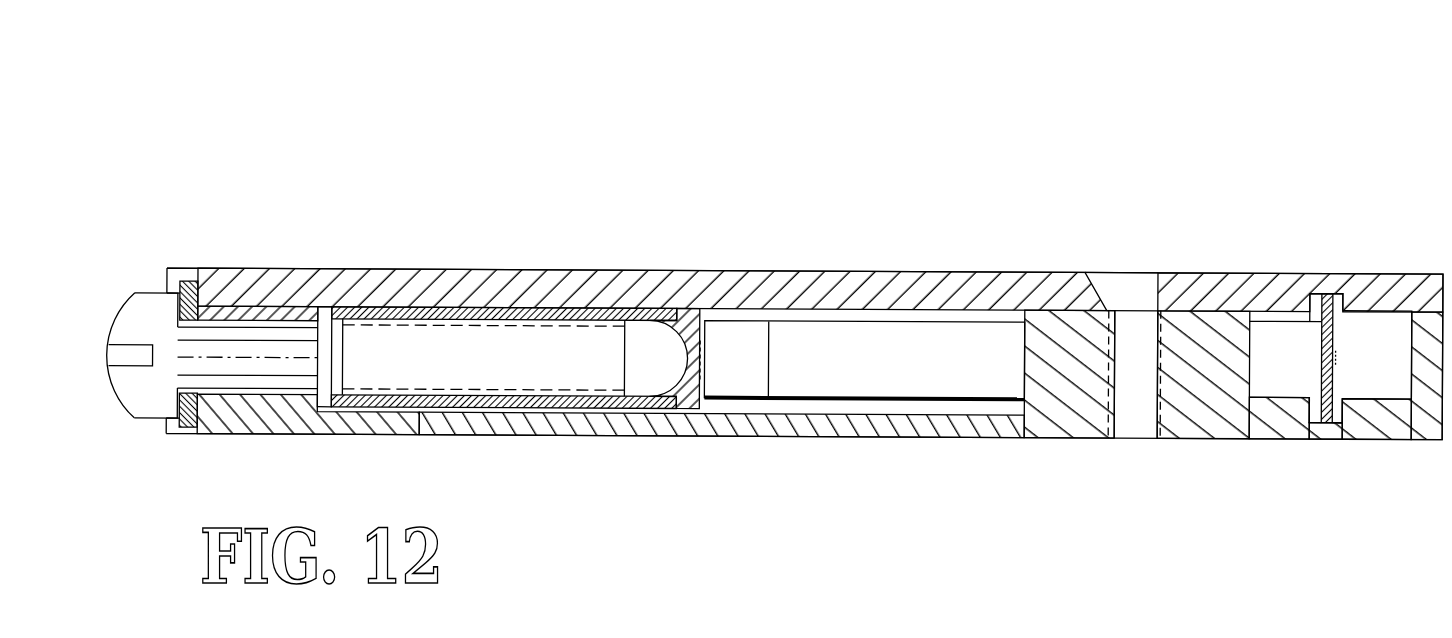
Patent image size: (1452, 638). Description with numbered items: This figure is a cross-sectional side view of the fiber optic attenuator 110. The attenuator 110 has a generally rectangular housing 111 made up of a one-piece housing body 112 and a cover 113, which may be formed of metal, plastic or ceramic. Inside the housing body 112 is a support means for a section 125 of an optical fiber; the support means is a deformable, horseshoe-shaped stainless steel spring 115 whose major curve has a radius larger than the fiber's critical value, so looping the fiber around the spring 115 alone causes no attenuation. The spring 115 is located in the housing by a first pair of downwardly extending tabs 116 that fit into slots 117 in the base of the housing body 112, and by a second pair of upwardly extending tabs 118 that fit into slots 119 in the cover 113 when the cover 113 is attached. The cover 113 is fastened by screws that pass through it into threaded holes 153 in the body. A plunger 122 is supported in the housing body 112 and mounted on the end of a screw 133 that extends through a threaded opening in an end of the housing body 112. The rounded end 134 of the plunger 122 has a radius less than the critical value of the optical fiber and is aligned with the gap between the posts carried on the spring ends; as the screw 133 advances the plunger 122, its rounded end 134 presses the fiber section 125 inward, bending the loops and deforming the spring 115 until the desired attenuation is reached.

The attenuator 110 is at (395, 148).
The housing 111 is at (1238, 434).
The housing body 112 is at (878, 434).
The cover 113 is at (738, 265).
The spring 115 is at (1312, 330).
The downwardly extending tabs 116 is at (1322, 412).
The slots 117 is at (1348, 394).
The upwardly extending tabs 118 is at (1323, 289).
The slots 119 is at (1343, 308).
The plunger 122 is at (467, 404).
The section of optical fiber 125 is at (708, 350).
The screw 133 is at (253, 338).
The rounded end of plunger 134 is at (692, 318).
The threaded holes 153 is at (1118, 398).